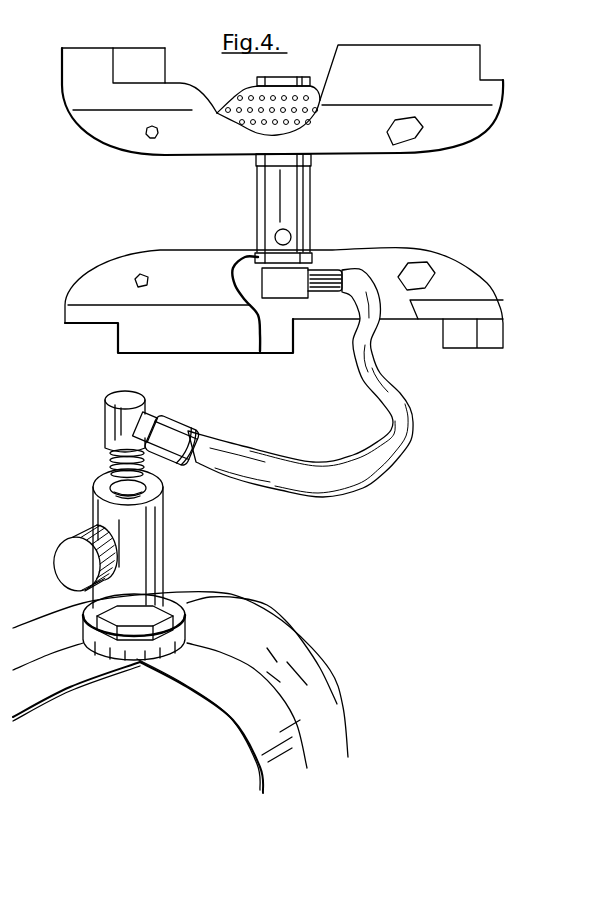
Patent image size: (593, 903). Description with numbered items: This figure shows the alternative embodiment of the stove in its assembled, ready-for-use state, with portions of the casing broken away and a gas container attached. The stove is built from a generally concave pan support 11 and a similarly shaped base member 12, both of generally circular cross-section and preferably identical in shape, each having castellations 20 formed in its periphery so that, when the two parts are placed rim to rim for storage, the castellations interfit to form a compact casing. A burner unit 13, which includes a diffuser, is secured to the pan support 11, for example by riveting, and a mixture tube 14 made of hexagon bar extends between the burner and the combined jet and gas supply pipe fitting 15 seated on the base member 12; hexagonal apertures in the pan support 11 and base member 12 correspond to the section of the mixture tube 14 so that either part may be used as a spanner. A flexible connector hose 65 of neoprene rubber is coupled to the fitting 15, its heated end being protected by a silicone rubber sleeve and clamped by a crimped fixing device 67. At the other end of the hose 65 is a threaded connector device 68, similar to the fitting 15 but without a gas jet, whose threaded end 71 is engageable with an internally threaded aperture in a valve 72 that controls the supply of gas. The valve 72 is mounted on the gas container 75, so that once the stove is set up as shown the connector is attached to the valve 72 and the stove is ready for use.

The pan support 11 is at (472, 71).
The base member 12 is at (487, 283).
The burner unit 13 is at (245, 102).
The mixture tube 14 is at (305, 213).
The combined jet and gas supply pipe fitting 15 is at (273, 291).
The castellations 20 is at (155, 70).
The connector hose 65 is at (383, 477).
The sleeve / fixing device 67 is at (316, 292).
The threaded connector device 68 is at (112, 400).
The threaded end 71 is at (107, 457).
The valve 72 is at (163, 550).
The non-resealable container 75 is at (273, 622).